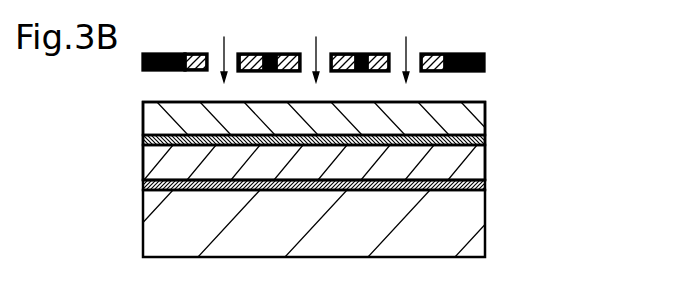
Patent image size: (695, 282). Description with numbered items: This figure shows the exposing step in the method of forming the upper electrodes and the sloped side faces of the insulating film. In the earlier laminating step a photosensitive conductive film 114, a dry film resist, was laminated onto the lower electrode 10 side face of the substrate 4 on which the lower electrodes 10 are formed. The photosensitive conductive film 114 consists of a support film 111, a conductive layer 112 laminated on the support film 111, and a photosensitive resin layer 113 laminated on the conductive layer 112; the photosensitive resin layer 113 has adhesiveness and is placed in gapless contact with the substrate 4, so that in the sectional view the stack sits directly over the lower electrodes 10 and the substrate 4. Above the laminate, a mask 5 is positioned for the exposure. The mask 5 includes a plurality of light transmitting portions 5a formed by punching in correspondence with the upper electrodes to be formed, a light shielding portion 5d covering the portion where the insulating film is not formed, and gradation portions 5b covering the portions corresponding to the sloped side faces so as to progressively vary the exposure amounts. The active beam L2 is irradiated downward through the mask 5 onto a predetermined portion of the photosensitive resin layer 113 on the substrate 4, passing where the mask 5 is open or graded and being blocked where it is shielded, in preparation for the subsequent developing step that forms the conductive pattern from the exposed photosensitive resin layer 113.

The mask 5 is at (487, 31).
The light transmitting portion 5a is at (214, 62).
The gradation portion 5b is at (254, 60).
The light shielding portion 5d is at (156, 53).
The active beam L2 is at (406, 50).
The support film 111 is at (457, 112).
The conductive layer 112 is at (485, 141).
The photosensitive resin layer 113 is at (457, 170).
The photosensitive conductive film 114 is at (583, 103).
The lower electrode 10 is at (485, 185).
The substrate 4 is at (457, 226).